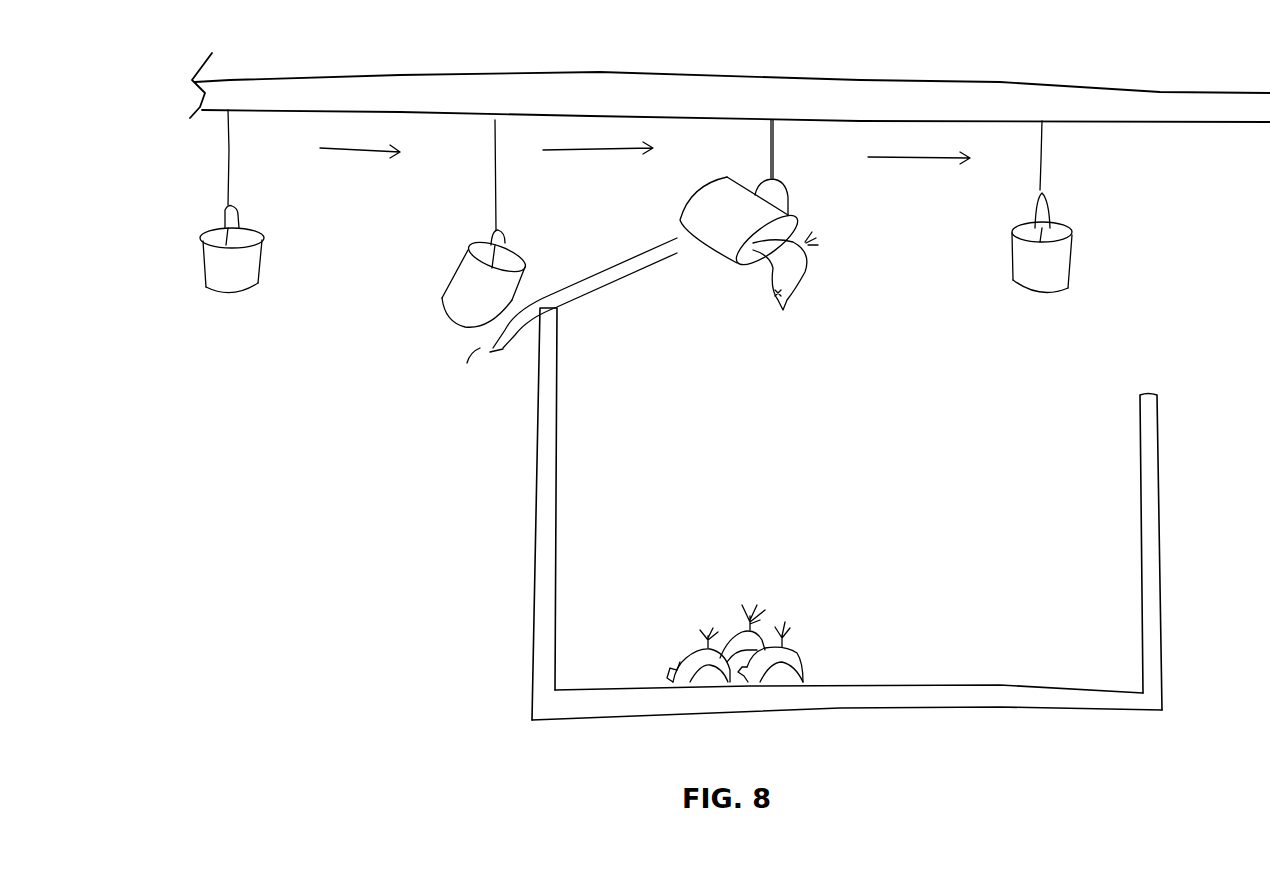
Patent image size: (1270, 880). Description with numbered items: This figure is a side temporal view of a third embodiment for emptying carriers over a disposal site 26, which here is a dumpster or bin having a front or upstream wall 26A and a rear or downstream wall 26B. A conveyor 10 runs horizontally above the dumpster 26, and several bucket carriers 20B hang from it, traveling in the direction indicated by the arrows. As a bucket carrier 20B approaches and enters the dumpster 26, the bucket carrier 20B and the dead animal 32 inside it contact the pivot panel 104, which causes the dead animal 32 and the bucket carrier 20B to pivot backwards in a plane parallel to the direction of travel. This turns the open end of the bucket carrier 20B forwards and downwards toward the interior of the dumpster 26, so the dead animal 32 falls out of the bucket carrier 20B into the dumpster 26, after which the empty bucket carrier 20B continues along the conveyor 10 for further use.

The conveyor 10 is at (353, 80).
The bucket carrier 20B is at (228, 295).
The pivot panel 104 is at (488, 355).
The dead animal 32 is at (807, 283).
The disposal site 26 is at (837, 514).
The front or upstream wall 26A is at (538, 513).
The rear or downstream wall 26B is at (1160, 522).